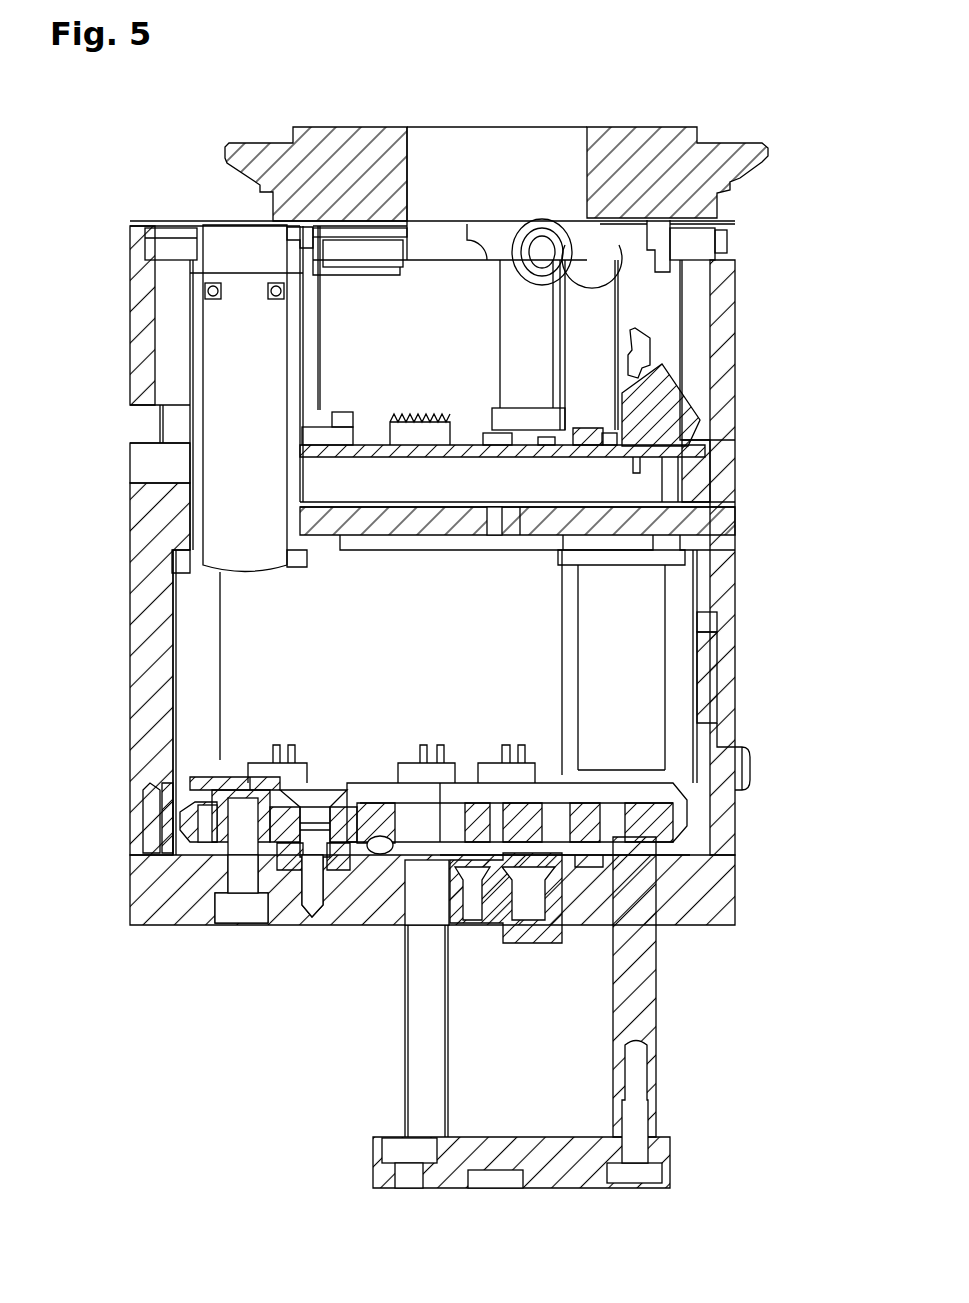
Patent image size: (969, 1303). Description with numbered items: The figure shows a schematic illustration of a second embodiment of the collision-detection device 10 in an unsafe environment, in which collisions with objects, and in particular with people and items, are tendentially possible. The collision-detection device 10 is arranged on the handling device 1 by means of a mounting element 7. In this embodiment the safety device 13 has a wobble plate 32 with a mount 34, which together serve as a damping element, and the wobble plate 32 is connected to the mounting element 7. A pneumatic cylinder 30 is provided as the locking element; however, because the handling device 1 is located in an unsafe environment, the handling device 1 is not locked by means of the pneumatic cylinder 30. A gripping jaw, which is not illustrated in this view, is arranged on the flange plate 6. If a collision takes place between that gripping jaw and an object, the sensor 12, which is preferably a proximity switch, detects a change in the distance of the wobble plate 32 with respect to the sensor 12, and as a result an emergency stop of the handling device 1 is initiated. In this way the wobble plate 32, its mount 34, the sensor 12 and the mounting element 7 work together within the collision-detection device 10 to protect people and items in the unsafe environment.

The handling device 1 is at (798, 186).
The pneumatic cylinder 30 is at (230, 342).
The safety device 13 is at (370, 728).
The sensor 12 is at (203, 777).
The wobble plate 32 is at (365, 822).
The mount 34 is at (383, 852).
The mounting element 7 is at (650, 985).
The flange plate 6 is at (665, 1150).
The collision-detection device 10 is at (234, 997).